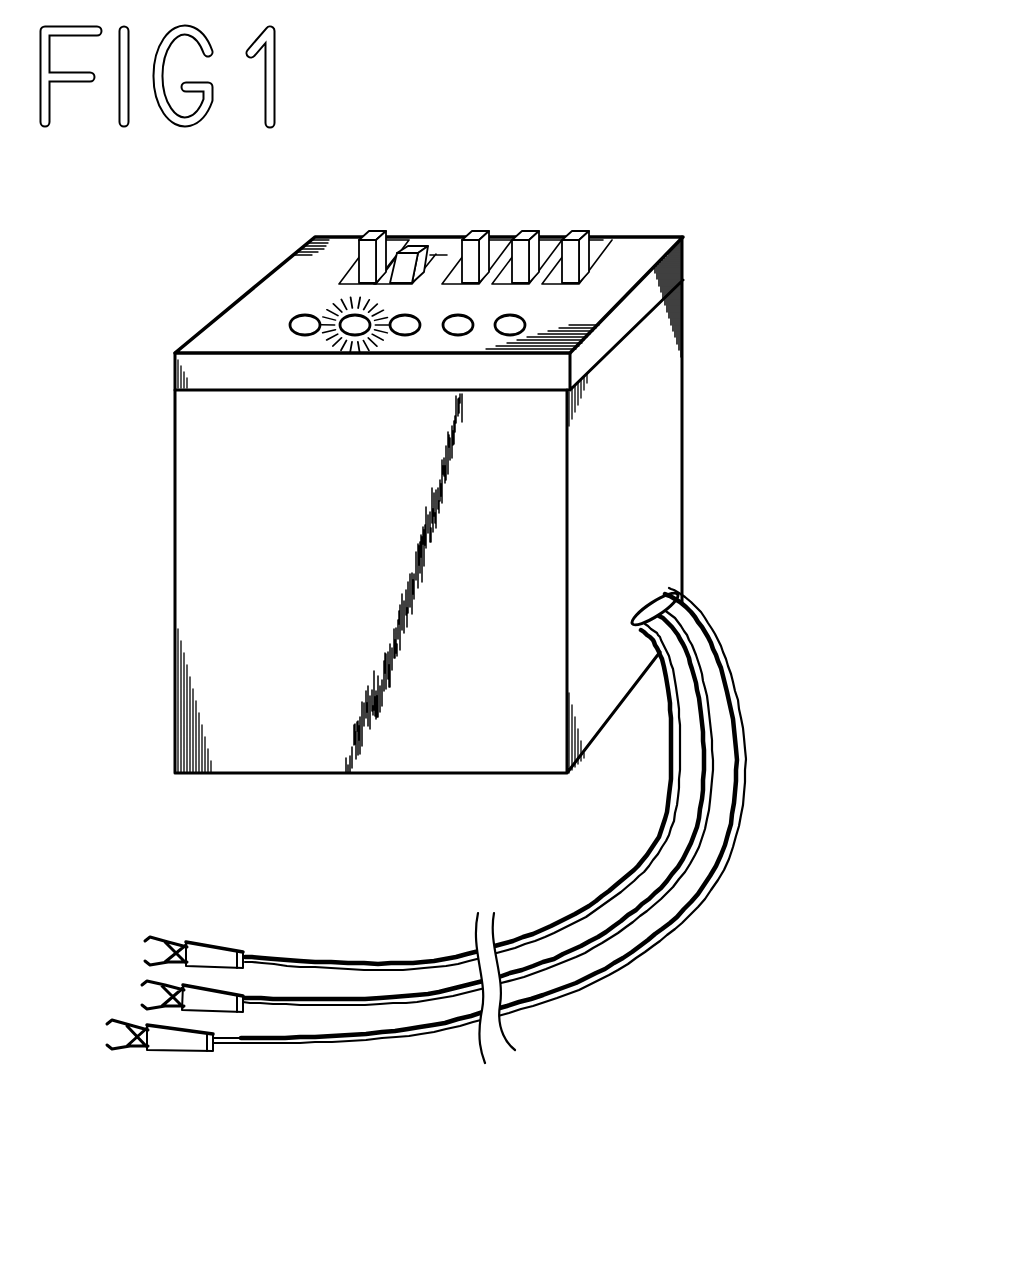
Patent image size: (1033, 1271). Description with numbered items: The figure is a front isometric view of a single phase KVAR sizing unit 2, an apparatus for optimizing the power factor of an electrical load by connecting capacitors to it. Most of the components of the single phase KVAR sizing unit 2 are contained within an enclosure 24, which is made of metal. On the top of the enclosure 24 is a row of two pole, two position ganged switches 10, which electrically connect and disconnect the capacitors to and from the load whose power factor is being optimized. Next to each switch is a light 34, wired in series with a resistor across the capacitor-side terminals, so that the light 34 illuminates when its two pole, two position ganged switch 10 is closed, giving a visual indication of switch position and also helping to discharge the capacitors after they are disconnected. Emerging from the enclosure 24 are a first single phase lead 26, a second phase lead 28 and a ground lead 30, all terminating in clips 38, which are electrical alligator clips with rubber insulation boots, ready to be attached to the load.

The single phase KVAR sizing unit 2 is at (786, 280).
The two pole, two position ganged switches 10 is at (382, 231).
The enclosure 24 is at (683, 547).
The first single phase lead 26 is at (668, 927).
The second phase lead 28 is at (700, 830).
The ground lead 30 is at (603, 896).
The light 34 is at (497, 335).
The clips 38 is at (242, 990).